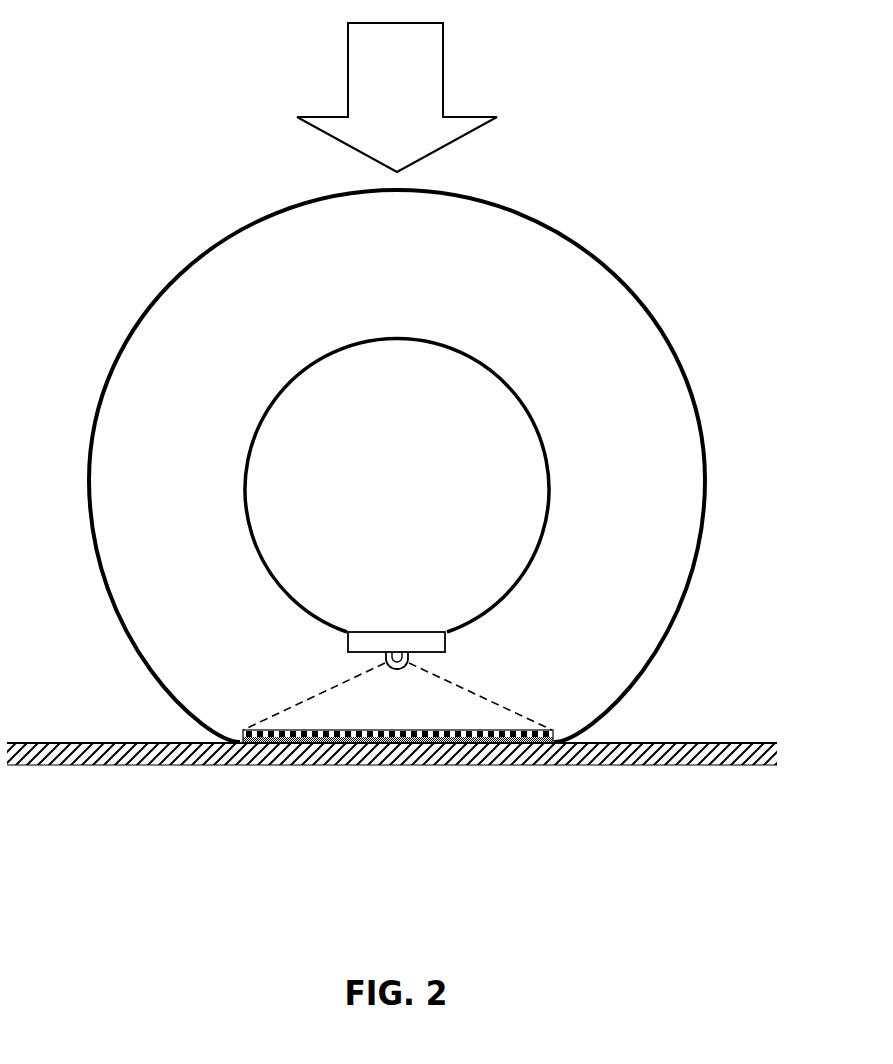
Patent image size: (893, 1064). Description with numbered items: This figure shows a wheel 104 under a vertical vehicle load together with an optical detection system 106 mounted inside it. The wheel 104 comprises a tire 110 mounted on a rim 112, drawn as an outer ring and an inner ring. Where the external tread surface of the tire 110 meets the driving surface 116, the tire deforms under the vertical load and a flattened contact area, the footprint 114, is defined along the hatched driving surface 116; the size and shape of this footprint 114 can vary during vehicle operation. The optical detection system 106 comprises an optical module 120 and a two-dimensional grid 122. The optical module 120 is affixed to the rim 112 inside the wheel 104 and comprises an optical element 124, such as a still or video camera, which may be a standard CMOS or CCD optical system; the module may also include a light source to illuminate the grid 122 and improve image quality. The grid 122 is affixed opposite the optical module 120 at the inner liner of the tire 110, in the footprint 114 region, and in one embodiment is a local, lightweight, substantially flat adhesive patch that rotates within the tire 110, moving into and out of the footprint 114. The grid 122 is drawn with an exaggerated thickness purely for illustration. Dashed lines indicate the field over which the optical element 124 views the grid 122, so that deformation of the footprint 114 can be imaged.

The wheel 104 is at (149, 65).
The optical detection system 106 is at (484, 667).
The tire 110 is at (598, 260).
The rim 112 is at (495, 377).
The footprint 114 is at (238, 780).
The driving surface 116 is at (712, 743).
The optical module 120 is at (377, 640).
The two-dimensional grid 122 is at (554, 740).
The optical element 124 is at (386, 660).